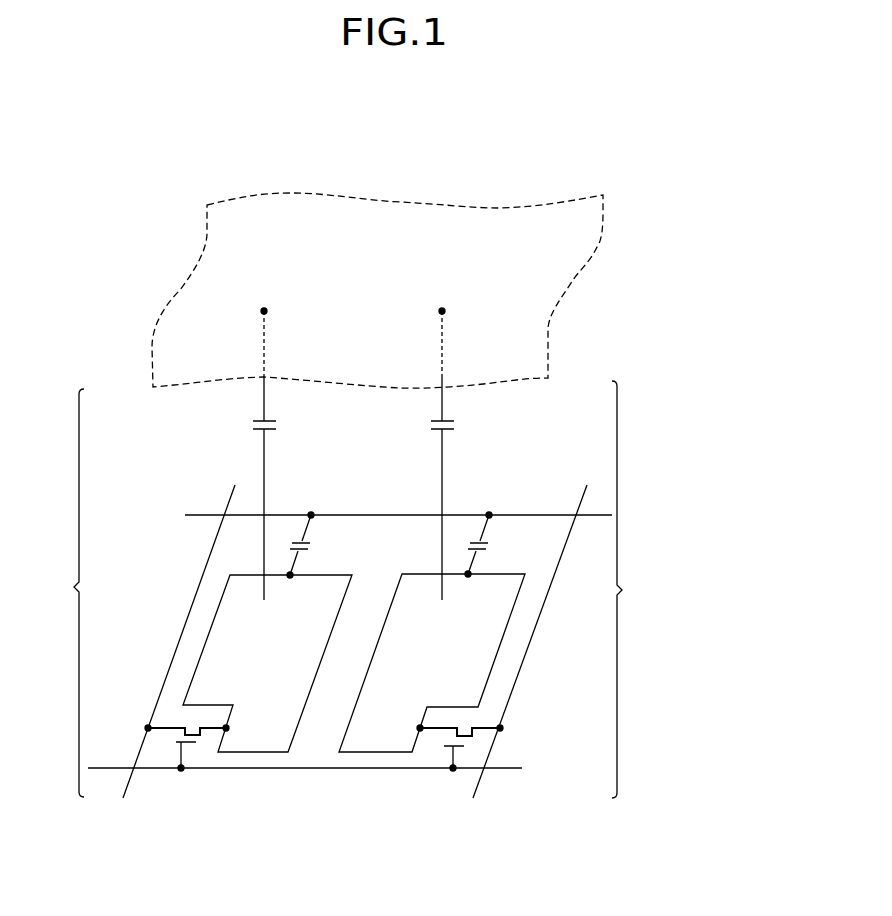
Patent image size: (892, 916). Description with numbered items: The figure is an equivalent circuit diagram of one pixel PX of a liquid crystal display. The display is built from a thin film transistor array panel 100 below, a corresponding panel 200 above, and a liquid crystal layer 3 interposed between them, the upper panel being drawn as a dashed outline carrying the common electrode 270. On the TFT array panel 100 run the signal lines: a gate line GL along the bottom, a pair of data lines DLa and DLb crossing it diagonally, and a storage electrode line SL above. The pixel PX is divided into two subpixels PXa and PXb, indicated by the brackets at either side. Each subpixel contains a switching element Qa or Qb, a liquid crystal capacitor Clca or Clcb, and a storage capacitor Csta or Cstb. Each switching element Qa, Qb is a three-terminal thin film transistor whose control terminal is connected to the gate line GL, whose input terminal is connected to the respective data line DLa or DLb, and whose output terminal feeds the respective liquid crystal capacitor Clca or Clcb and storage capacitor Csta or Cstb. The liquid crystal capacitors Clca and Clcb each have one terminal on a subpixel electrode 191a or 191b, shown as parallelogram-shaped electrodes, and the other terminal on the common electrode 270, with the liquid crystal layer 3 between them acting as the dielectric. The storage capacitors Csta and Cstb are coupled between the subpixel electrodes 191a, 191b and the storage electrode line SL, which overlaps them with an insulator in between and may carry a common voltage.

The common electrode 270 is at (597, 249).
The corresponding panel 200 is at (659, 289).
The liquid crystal layer 3 is at (668, 398).
The thin film transistor array panel 100 is at (673, 638).
The subpixel electrode 191a is at (257, 753).
The subpixel electrode 191b is at (503, 635).
The liquid crystal capacitor Clca is at (286, 489).
The liquid crystal capacitor Clcb is at (464, 489).
The storage capacitor Csta is at (323, 545).
The storage capacitor Cstb is at (501, 544).
The data line DLa is at (188, 628).
The data line DLb is at (539, 628).
The storage electrode line SL is at (381, 514).
The gate line GL is at (321, 767).
The switching element Qa is at (187, 748).
The switching element Qb is at (460, 748).
The subpixel PXa is at (56, 593).
The subpixel PXb is at (640, 589).
The pixel PX is at (371, 817).